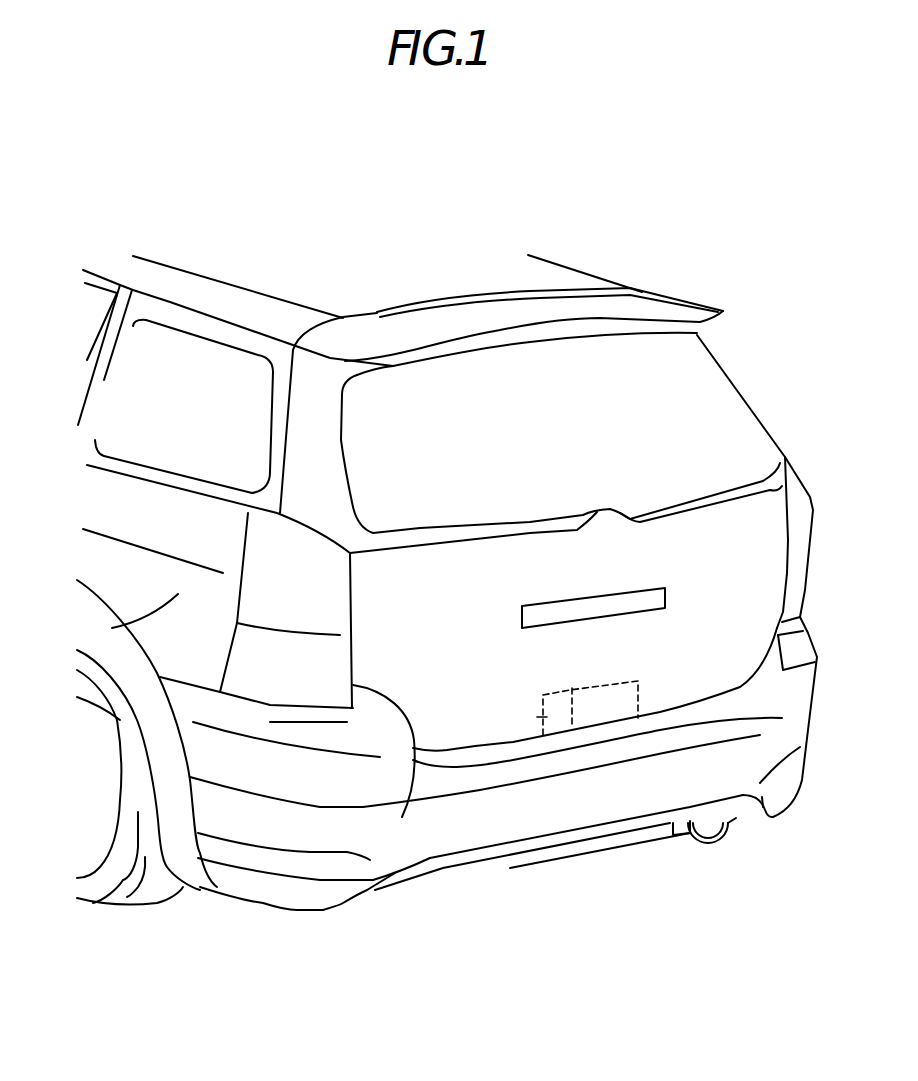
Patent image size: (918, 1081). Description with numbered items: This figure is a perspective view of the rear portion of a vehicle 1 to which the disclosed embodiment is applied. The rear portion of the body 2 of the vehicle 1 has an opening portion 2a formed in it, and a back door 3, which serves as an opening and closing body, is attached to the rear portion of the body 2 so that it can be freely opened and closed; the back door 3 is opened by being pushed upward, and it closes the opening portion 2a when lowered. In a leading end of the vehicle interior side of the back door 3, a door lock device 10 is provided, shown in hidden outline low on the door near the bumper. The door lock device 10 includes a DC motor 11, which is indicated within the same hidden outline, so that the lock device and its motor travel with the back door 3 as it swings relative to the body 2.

The vehicle 1 is at (775, 372).
The body 2 is at (112, 628).
The opening portion 2a is at (402, 833).
The back door 3 is at (763, 523).
The door lock device 10 is at (638, 693).
The DC motor 11 is at (533, 713).